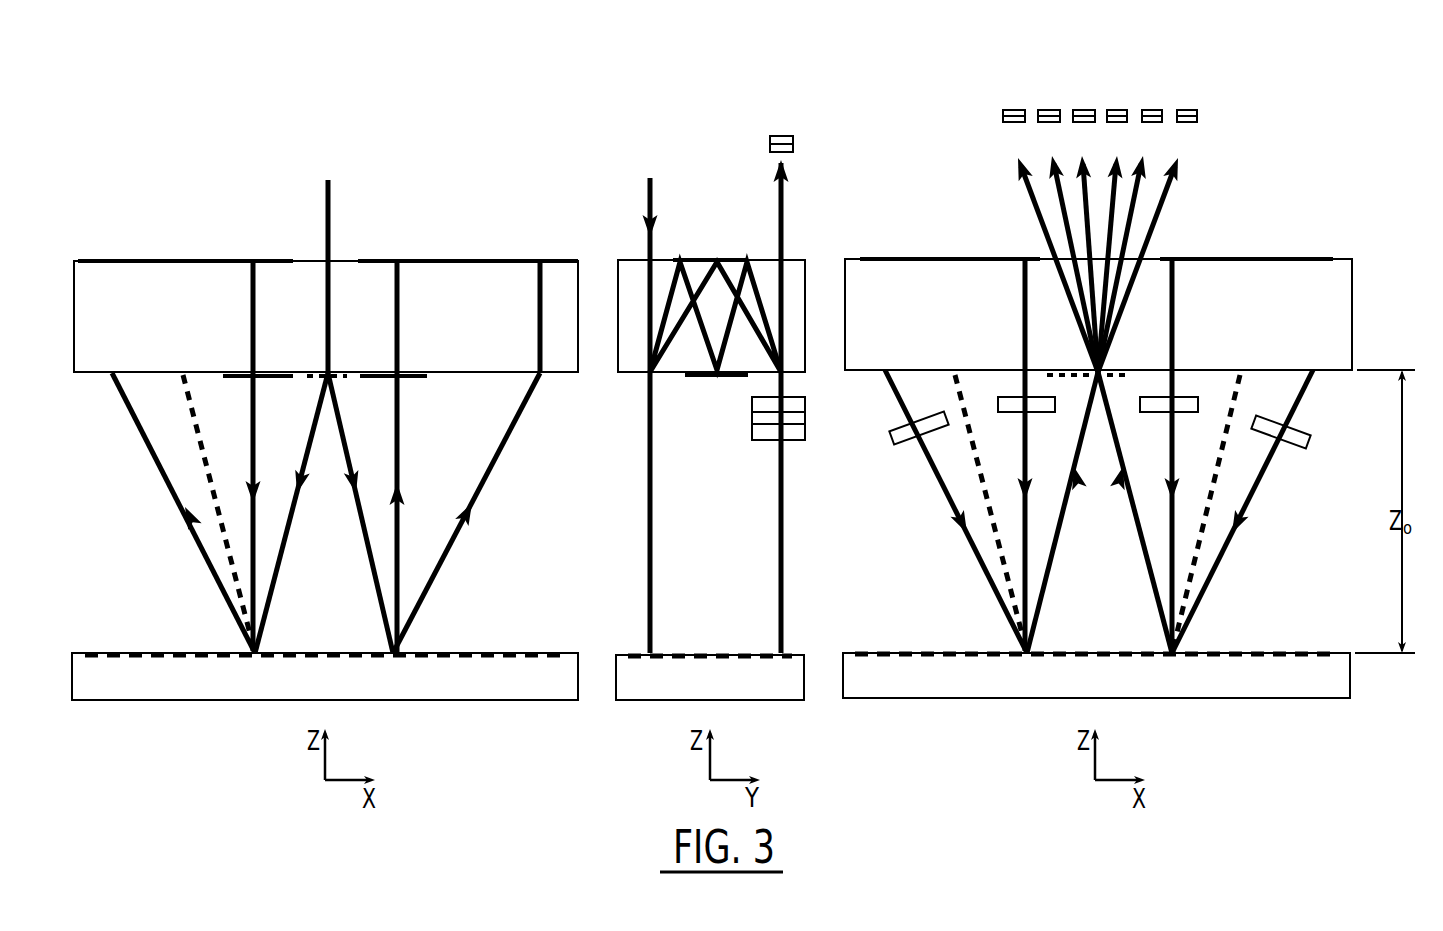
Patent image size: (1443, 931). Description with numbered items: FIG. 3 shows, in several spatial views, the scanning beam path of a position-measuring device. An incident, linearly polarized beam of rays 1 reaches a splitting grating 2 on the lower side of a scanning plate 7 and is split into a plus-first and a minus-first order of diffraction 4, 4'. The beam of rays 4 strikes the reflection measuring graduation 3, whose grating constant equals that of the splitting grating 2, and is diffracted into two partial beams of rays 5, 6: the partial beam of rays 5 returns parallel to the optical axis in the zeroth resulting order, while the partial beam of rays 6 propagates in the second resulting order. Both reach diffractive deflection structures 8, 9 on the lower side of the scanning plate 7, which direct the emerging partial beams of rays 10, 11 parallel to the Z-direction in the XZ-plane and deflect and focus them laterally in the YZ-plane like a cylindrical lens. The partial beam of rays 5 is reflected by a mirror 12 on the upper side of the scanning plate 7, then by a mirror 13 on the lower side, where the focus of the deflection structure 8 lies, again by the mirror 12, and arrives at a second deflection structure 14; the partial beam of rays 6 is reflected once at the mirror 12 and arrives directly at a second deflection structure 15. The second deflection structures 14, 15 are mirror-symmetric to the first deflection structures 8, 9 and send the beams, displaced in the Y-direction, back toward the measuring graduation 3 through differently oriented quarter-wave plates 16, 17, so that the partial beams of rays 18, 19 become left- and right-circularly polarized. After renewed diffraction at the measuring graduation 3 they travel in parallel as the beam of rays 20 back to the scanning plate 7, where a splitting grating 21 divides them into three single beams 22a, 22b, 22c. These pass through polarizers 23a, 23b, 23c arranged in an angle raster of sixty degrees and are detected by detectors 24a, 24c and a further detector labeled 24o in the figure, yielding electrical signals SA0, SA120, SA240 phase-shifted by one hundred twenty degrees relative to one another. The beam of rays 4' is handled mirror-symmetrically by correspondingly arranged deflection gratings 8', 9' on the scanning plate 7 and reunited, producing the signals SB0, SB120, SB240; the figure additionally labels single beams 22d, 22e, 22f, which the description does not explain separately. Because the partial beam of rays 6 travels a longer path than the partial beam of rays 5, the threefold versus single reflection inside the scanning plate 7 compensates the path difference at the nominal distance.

The beam of rays 1 is at (331, 218).
The splitting grating 2 is at (306, 378).
The measuring graduation 3 is at (491, 652).
The +1st order of diffraction beam of rays 4 is at (358, 513).
The −1st order of diffraction beam of rays 4' is at (291, 513).
The partial beam of rays 5 is at (400, 466).
The partial beam of rays 6 is at (511, 438).
The scanning plate 7 is at (90, 376).
The diffractive deflection structure 8 is at (367, 409).
The deflection grating 8' is at (256, 411).
The diffractive deflection structure 9 is at (559, 407).
The deflection grating 9' is at (206, 514).
The emerging partial beam of rays 10 is at (399, 304).
The emerging partial beam of rays 11 is at (537, 289).
The mirror 12 is at (548, 262).
The mirror 13 is at (697, 378).
The second deflection structure 14 is at (1206, 369).
The second deflection structure 15 is at (1274, 369).
The λ/4-plate 16 is at (1155, 403).
The λ/4-plate 17 is at (1307, 440).
The partial beam of rays 18 is at (1174, 452).
The partial beam of rays 19 is at (1249, 503).
The beam of rays 20 is at (1120, 460).
The splitting grating 21 is at (1052, 369).
The single beam 22a is at (1032, 185).
The single beam 22b is at (1060, 210).
The single beam 22c is at (1090, 247).
The interfering output beam 22d is at (1170, 183).
The interfering output beam 22e is at (1138, 210).
The interfering output beam 22f is at (1118, 247).
The polarizer 23a is at (1002, 116).
The polarizer 23b is at (1048, 124).
The polarizer 23c is at (1083, 125).
The detector 24a is at (1002, 113).
The detector 24c is at (1038, 110).
The detector signal 24o is at (1097, 110).
The electrical signal SA240 is at (1012, 81).
The electrical signal SA0 is at (1048, 93).
The electrical signal SA120 is at (1083, 81).
The electrical signal SB240 is at (1117, 81).
The electrical signal SB0 is at (1152, 93).
The electrical signal SB120 is at (1187, 81).